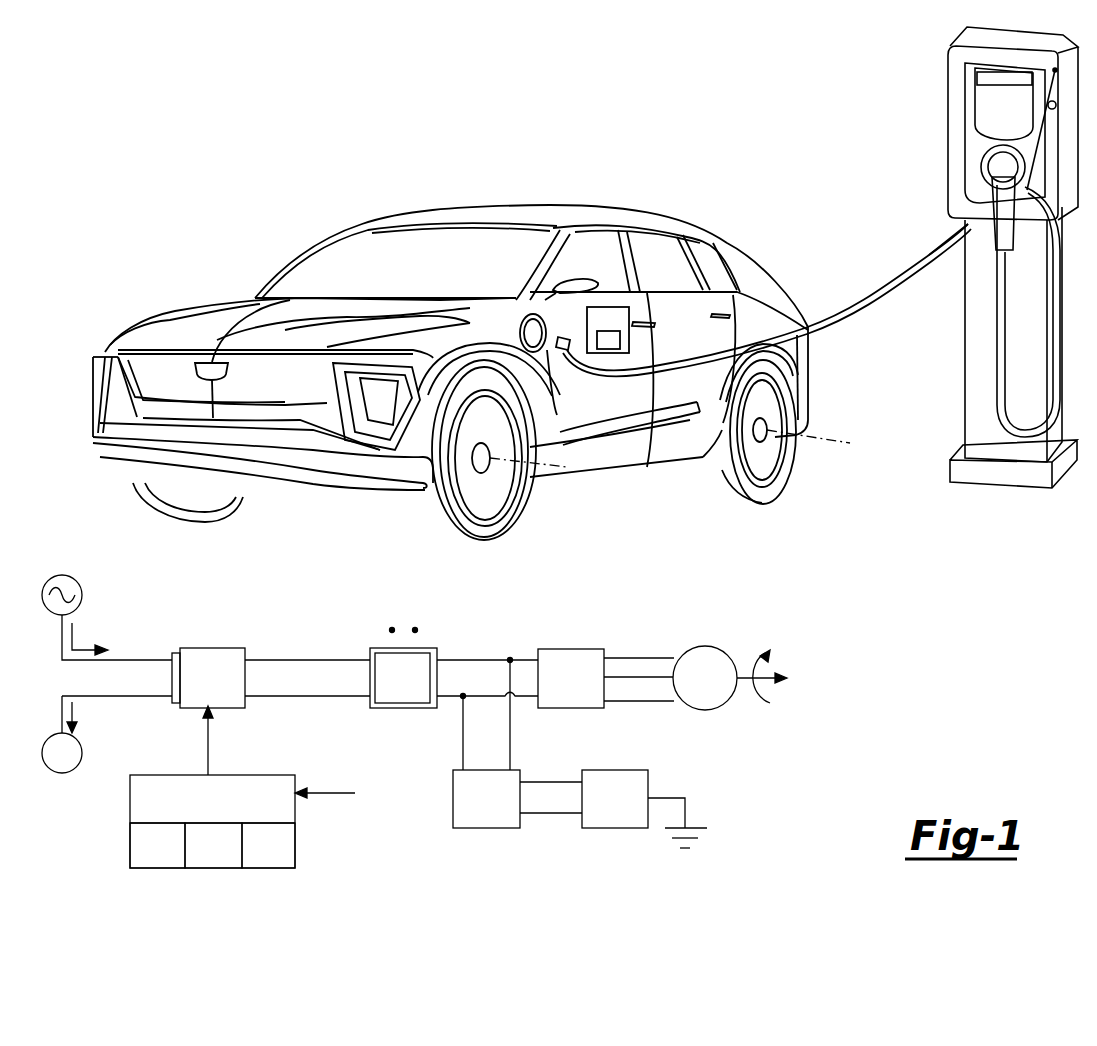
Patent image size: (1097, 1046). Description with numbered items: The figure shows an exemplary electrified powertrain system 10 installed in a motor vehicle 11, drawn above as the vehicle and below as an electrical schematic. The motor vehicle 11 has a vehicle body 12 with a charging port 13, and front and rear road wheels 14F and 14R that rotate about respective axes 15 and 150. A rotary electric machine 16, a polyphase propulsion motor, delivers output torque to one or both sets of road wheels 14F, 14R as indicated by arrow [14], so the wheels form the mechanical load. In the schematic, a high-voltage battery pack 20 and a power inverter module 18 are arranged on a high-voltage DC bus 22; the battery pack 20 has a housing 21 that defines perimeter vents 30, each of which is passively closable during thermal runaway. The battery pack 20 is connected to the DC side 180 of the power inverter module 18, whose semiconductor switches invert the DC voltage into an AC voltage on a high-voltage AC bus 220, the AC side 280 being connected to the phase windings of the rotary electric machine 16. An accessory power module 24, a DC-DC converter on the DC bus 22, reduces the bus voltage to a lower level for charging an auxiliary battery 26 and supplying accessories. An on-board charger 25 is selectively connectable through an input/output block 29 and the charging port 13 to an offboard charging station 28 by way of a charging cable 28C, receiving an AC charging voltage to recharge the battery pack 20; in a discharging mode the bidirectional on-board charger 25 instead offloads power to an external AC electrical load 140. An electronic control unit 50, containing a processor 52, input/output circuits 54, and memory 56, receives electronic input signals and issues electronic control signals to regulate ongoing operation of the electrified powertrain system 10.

The electrified powertrain system 10 is at (831, 603).
The motor vehicle 11 is at (668, 180).
The vehicle body 12 is at (190, 305).
The charging port 13 is at (527, 330).
The front road wheels 14F is at (423, 505).
The rear road wheels 14R is at (722, 482).
The road wheels (torque delivery indication) 14 is at (784, 690).
The axis of front road wheels 15 is at (570, 467).
The axis of rear road wheels 150 is at (848, 443).
The rotary electric machine 16 is at (705, 646).
The power inverter module 18 is at (572, 648).
The DC side 180 is at (524, 638).
The high-voltage battery pack 20 is at (420, 648).
The housing 21 is at (372, 678).
The high-voltage DC bus 22 is at (304, 647).
The accessory power module 24 is at (483, 829).
The on-board charger 25 is at (212, 648).
The auxiliary battery 26 is at (611, 829).
The offboard charging station 28 is at (949, 96).
The charging cable 28C is at (930, 250).
The input/output block 29 is at (176, 652).
The perimeter vents 30 is at (414, 628).
The electronic control unit 50 is at (266, 773).
The processor 52 is at (262, 870).
The input/output circuit 54 is at (156, 870).
The memory 56 is at (210, 870).
The external AC electrical load 140 is at (62, 775).
The high-voltage AC bus 220 is at (642, 705).
The AC side 280 is at (603, 632).